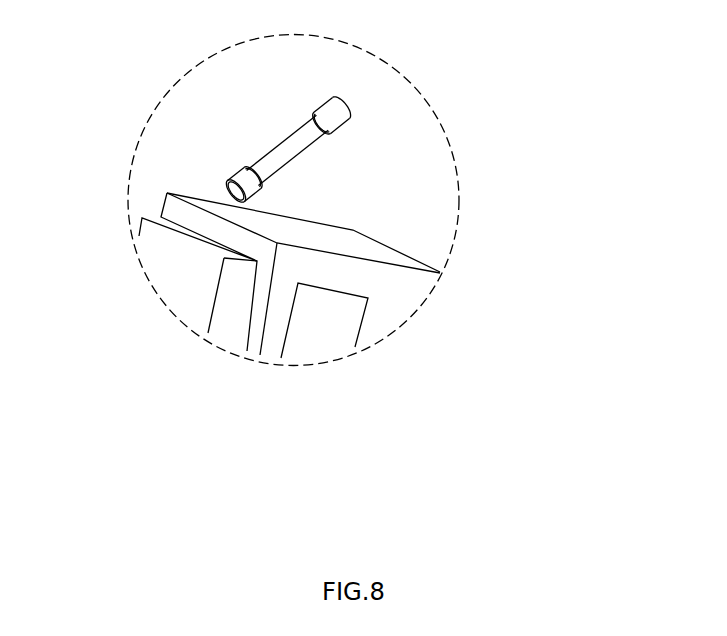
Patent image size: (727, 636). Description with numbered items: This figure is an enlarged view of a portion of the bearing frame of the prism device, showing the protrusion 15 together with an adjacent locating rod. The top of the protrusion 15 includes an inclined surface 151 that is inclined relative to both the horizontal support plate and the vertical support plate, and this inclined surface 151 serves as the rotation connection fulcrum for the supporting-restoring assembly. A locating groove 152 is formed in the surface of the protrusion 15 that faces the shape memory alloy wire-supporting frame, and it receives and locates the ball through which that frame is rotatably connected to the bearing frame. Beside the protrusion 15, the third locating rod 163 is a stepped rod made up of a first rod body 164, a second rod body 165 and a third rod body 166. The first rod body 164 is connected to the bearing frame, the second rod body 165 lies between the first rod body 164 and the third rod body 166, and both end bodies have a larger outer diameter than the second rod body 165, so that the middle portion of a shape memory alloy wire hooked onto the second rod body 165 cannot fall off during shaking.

The protrusion 15 is at (311, 319).
The inclined surface 151 is at (197, 285).
The locating groove 152 is at (337, 315).
The third locating rod 163 is at (453, 179).
The first rod body 164 is at (337, 118).
The second rod body 165 is at (289, 150).
The third rod body 166 is at (257, 183).